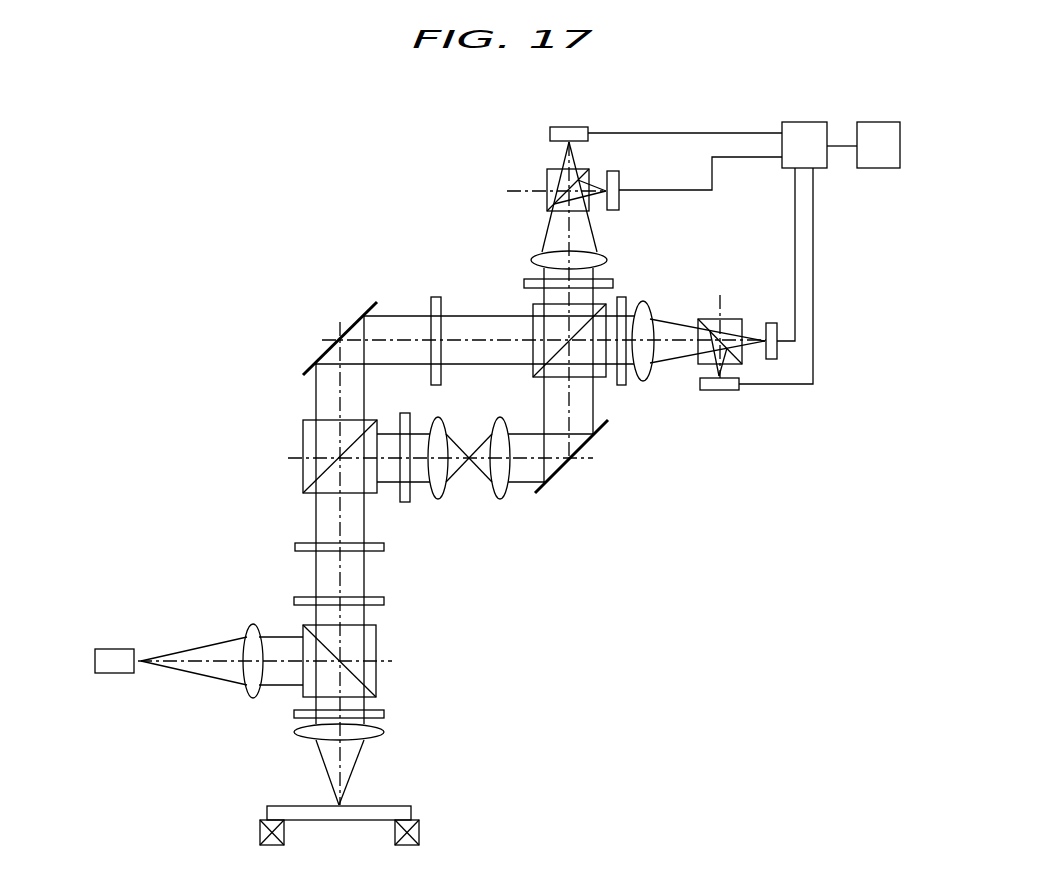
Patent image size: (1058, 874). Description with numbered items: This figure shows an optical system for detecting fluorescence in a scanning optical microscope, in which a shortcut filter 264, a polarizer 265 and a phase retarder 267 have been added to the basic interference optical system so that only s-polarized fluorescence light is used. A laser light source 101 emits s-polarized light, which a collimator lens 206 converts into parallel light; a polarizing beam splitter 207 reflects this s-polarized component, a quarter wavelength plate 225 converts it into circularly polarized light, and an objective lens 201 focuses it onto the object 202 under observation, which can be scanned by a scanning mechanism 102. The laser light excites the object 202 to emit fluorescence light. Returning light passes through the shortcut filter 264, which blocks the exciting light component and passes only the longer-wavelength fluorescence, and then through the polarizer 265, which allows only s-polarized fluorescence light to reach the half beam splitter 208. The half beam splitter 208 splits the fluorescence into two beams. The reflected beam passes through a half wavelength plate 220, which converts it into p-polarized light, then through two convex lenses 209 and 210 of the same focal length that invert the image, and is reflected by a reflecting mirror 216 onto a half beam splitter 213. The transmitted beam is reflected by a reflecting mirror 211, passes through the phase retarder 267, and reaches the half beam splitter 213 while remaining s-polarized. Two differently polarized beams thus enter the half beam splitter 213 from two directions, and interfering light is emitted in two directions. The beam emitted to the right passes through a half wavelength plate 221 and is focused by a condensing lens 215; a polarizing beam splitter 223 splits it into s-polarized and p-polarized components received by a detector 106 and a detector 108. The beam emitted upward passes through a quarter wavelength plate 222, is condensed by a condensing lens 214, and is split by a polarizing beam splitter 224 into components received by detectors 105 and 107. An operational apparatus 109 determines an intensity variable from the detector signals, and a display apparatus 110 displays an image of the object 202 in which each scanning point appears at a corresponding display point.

The laser light source 101 is at (118, 649).
The scanning mechanism 102 is at (419, 836).
The detector 105 is at (550, 134).
The detector 106 is at (770, 323).
The detector 107 is at (619, 178).
The detector 108 is at (720, 390).
The operational apparatus 109 is at (803, 122).
The display apparatus 110 is at (880, 122).
The objective lens 201 is at (298, 737).
The object under observation 202 is at (400, 806).
The collimator lens 206 is at (244, 630).
The polarizing beam splitter 207 is at (377, 676).
The half beam splitter 208 is at (303, 430).
The convex lens 209 is at (438, 499).
The convex lens 210 is at (500, 499).
The reflecting mirror 211 is at (320, 357).
The half beam splitter 213 is at (533, 310).
The condensing lens 214 is at (531, 258).
The condensing lens 215 is at (646, 303).
The reflecting mirror 216 is at (580, 452).
The half wavelength plate 220 is at (404, 413).
The half wavelength plate 221 is at (622, 297).
The quarter wavelength plate 222 is at (524, 282).
The polarizing beam splitter 223 is at (706, 319).
The polarizing beam splitter 224 is at (547, 179).
The quarter wavelength plate 225 is at (294, 714).
The shortcut filter 264 is at (294, 600).
The polarizer 265 is at (295, 546).
The phase retarder 267 is at (432, 297).